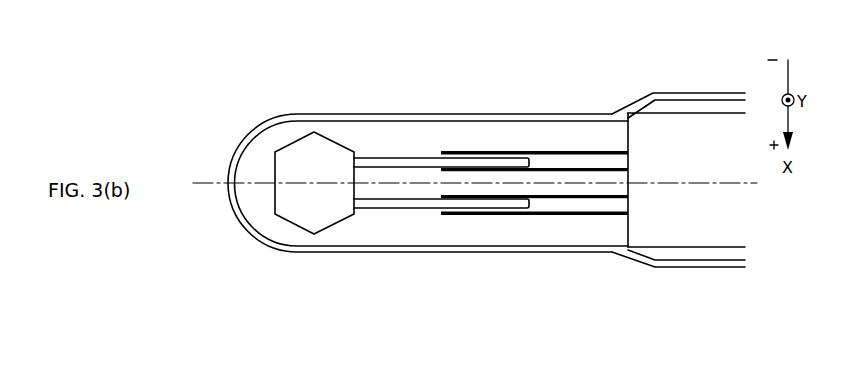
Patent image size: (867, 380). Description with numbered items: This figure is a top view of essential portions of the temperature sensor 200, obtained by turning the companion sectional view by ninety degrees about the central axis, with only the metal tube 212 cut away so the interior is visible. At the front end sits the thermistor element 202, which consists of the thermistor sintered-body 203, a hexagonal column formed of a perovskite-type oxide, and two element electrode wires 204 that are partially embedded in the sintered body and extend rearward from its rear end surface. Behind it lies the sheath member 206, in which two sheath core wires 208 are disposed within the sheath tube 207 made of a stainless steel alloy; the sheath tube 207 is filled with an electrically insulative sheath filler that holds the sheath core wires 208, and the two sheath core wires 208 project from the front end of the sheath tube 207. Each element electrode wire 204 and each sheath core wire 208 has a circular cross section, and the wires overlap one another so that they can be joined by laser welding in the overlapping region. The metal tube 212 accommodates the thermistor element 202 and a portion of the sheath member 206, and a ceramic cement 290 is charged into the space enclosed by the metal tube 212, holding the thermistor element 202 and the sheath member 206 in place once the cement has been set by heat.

The temperature sensor 200 is at (256, 48).
The thermistor element 202 is at (402, 221).
The thermistor sintered-body 203 is at (315, 218).
The element electrode wire 204 is at (401, 166).
The sheath member 206 is at (593, 210).
The sheath tube 207 is at (686, 211).
The sheath core wire 208 is at (607, 162).
The metal tube 212 is at (566, 114).
The cement 290 is at (367, 135).